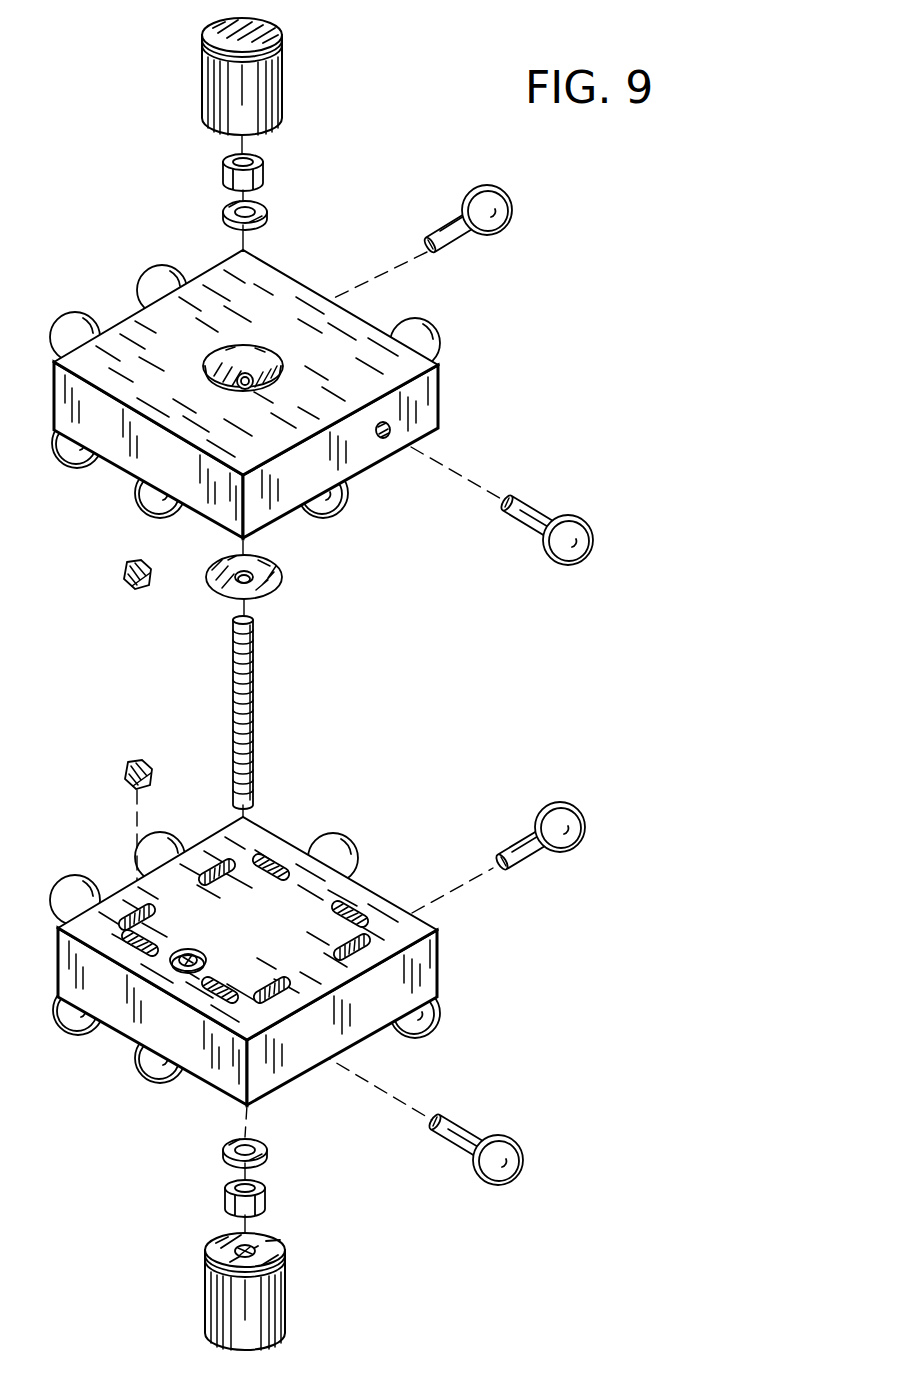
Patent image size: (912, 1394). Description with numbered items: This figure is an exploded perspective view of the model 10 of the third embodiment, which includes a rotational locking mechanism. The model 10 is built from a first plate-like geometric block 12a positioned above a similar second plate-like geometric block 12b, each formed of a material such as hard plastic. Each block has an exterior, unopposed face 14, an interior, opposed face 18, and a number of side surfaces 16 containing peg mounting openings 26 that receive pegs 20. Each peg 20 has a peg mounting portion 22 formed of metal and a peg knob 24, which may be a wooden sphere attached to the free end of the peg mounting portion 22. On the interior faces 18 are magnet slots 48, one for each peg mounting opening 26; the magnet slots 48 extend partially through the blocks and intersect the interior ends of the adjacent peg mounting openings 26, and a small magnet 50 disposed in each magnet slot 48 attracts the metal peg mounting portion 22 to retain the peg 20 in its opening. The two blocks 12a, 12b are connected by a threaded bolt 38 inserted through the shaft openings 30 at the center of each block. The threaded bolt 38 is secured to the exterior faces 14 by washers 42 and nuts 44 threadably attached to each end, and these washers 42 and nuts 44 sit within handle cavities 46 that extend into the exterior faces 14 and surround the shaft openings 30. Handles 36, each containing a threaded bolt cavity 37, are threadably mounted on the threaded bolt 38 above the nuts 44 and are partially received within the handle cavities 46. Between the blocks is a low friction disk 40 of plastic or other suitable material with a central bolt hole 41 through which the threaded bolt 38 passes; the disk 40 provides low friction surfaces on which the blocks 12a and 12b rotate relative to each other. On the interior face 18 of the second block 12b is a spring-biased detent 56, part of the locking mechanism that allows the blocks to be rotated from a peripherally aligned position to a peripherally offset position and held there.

The model 10 is at (590, 697).
The first plate-like geometric block 12a is at (55, 414).
The second plate-like geometric block 12b is at (430, 970).
The exterior face 14 is at (355, 357).
The side surface 16 is at (430, 400).
The interior face 18 is at (62, 924).
The peg 20 is at (348, 662).
The peg mounting portion 22 is at (526, 519).
The peg knob 24 is at (591, 560).
The peg mounting opening 26 is at (385, 440).
The shaft opening 30 is at (249, 378).
The handle 36 is at (283, 79).
The threaded bolt cavity 37 is at (243, 1250).
The threaded bolt 38 is at (258, 712).
The low friction disk 40 is at (257, 591).
The bolt hole 41 is at (236, 588).
The washer 42 is at (249, 204).
The nut 44 is at (261, 174).
The handle cavity 46 is at (215, 355).
The magnet slot 48 is at (280, 870).
The magnet 50 is at (125, 584).
The spring-biased detent 56 is at (172, 966).